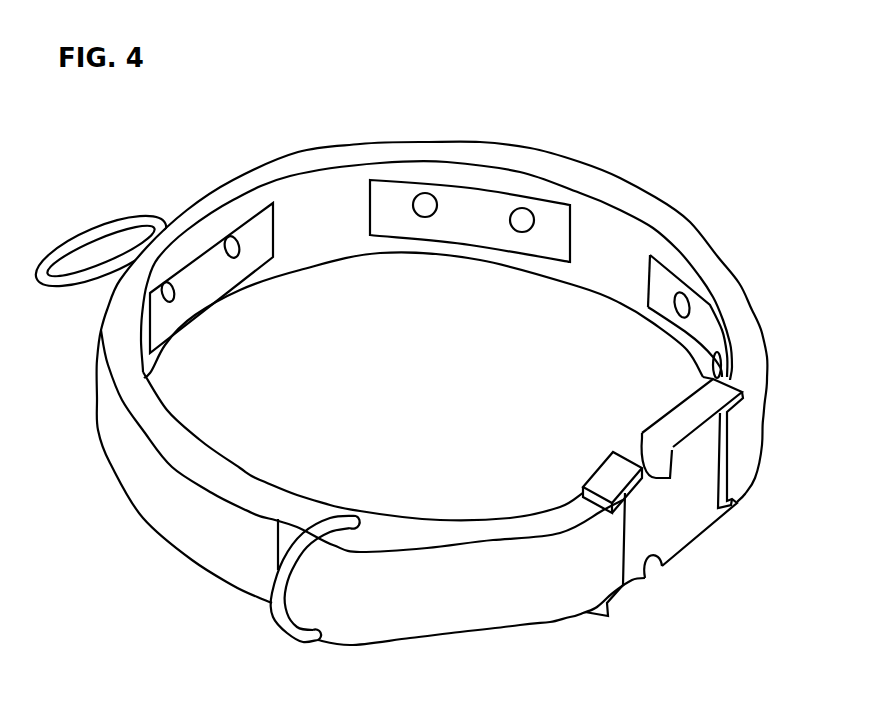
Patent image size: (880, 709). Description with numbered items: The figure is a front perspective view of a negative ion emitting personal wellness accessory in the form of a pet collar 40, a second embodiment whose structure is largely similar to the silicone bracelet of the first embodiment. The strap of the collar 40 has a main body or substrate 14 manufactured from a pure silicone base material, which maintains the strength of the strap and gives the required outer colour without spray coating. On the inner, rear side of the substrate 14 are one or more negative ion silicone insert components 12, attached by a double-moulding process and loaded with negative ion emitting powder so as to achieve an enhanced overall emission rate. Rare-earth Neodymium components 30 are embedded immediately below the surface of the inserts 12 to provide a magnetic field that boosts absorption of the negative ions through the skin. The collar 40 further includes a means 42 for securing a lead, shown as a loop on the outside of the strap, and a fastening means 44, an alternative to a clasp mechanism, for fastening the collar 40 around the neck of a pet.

The negative ion silicone insert component 12 is at (465, 218).
The main body or substrate 14 is at (605, 277).
The rare-earth Neodymium component 30 is at (523, 228).
The pet collar 40 is at (210, 597).
The means for securing a lead 42 is at (125, 218).
The fastening means 44 is at (613, 467).